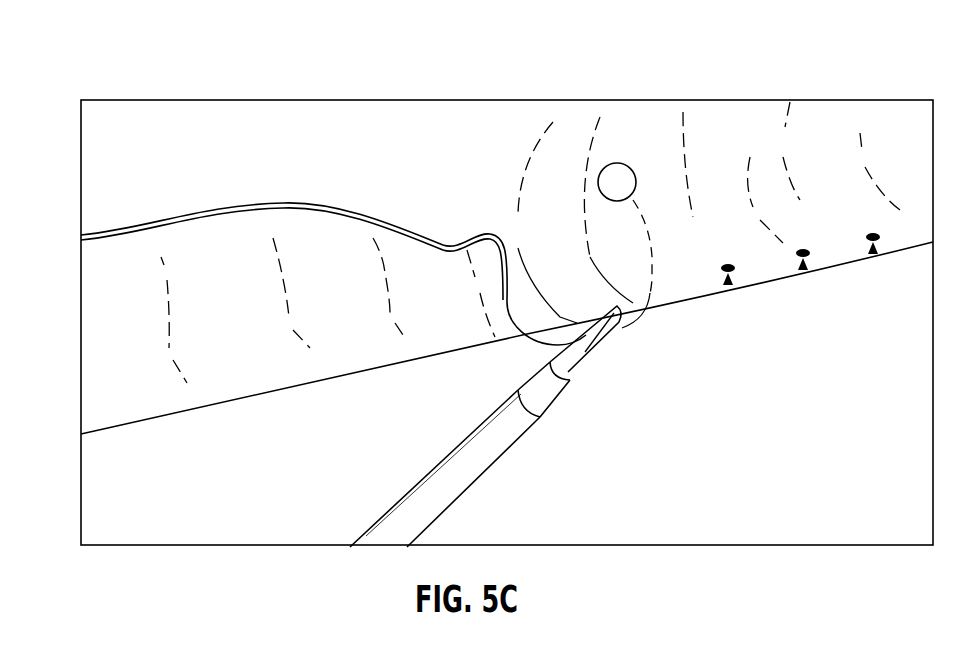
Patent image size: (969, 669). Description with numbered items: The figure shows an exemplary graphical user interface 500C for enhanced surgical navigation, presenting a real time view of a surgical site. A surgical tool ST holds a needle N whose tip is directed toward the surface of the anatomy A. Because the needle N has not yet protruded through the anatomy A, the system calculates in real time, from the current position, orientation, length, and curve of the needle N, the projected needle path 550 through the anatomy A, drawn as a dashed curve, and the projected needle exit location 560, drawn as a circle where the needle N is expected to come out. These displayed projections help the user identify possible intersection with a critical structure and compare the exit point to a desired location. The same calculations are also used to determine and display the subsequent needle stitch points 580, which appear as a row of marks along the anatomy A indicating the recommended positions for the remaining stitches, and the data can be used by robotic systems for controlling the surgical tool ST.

The user interface 500C is at (120, 46).
The projected needle path 550 is at (654, 244).
The projected needle exit location 560 is at (618, 160).
The subsequent needle stitch points 580 is at (728, 285).
The anatomy A is at (352, 350).
The needle N is at (630, 345).
The surgical tool ST is at (534, 440).